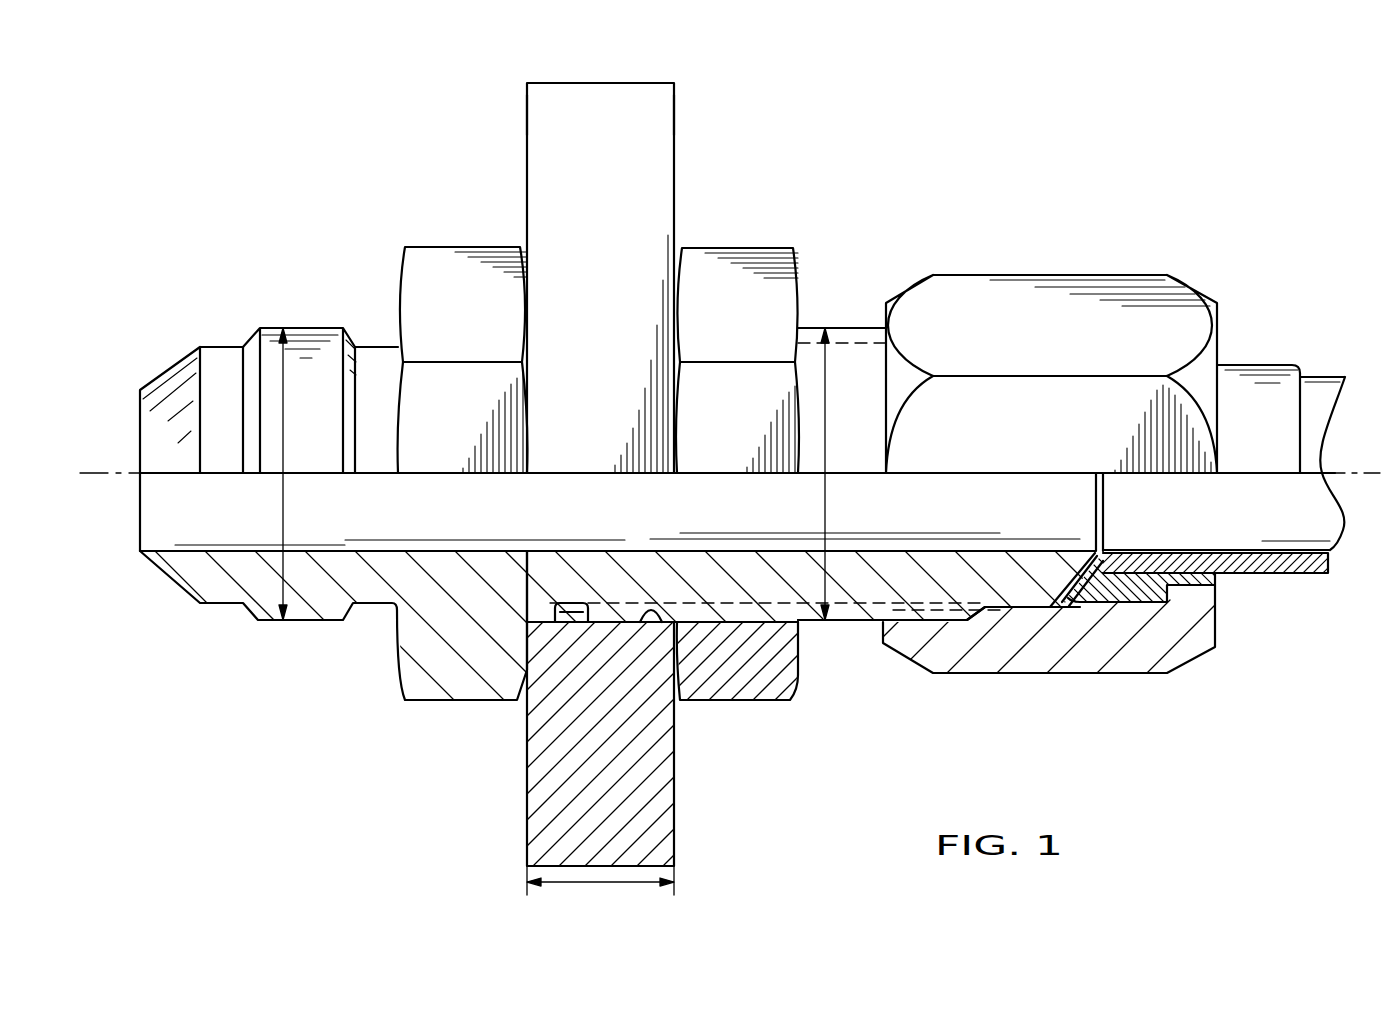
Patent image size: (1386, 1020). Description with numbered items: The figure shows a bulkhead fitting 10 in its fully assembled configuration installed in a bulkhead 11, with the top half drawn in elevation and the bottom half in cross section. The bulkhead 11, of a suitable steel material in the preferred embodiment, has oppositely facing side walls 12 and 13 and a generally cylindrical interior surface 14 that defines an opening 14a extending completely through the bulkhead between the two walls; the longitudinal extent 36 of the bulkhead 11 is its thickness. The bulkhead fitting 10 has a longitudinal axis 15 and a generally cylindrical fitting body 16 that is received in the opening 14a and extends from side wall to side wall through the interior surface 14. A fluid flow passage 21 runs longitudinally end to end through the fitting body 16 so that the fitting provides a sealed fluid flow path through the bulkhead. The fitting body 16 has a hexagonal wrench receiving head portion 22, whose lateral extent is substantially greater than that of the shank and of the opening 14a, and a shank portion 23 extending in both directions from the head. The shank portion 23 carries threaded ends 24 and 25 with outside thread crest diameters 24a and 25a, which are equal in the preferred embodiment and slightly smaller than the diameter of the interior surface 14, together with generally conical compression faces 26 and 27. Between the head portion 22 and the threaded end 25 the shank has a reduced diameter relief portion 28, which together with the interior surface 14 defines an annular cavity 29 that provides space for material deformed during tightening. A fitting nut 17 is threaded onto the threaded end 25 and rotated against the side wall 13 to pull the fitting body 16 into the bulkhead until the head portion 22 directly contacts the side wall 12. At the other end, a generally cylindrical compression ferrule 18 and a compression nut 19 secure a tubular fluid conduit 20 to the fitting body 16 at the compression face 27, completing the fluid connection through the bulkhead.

The bulkhead fitting 10 is at (995, 140).
The bulkhead 11 is at (588, 98).
The side wall 12 is at (527, 118).
The side wall 13 is at (676, 118).
The interior surface 14 is at (682, 620).
The opening 14a is at (715, 612).
The longitudinal axis 15 is at (1360, 470).
The fitting body 16 is at (908, 582).
The fitting nut 17 is at (722, 262).
The compression ferrule 18 is at (1135, 600).
The compression nut 19 is at (1193, 648).
The tubular fluid conduit 20 is at (1320, 573).
The fluid flow passage 21 is at (615, 548).
The head portion 22 is at (445, 265).
The shank portion 23 is at (838, 326).
The threaded end 24 is at (305, 625).
The thread crest diameter 24a is at (283, 497).
The threaded end 25 is at (862, 628).
The thread crest diameter 25a is at (825, 490).
The compression face 26 is at (168, 592).
The compression face 27 is at (1050, 604).
The reduced diameter relief portion 28 is at (582, 612).
The annular cavity 29 is at (572, 612).
The longitudinal extent 36 is at (610, 885).